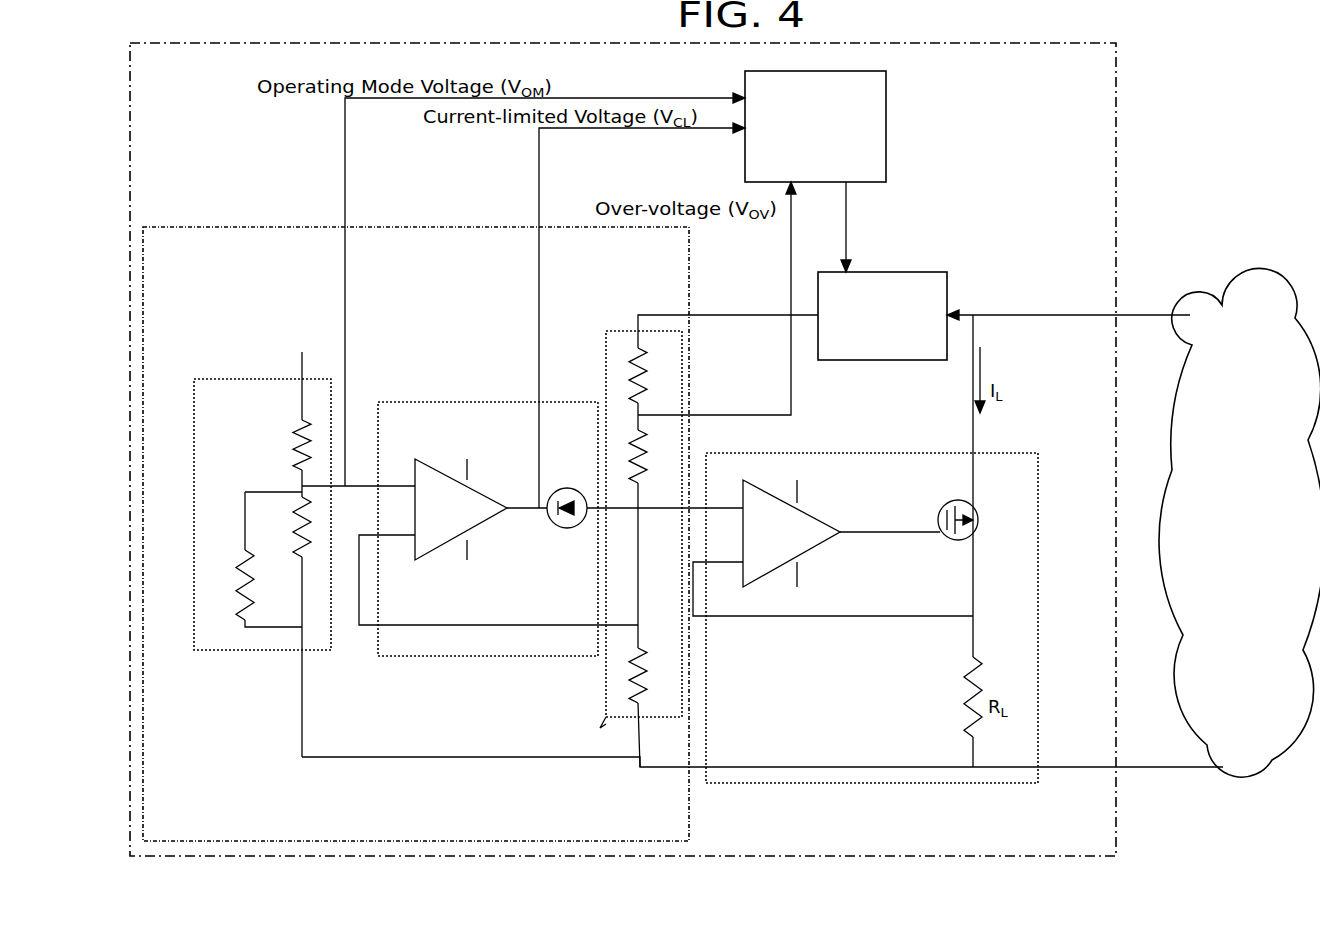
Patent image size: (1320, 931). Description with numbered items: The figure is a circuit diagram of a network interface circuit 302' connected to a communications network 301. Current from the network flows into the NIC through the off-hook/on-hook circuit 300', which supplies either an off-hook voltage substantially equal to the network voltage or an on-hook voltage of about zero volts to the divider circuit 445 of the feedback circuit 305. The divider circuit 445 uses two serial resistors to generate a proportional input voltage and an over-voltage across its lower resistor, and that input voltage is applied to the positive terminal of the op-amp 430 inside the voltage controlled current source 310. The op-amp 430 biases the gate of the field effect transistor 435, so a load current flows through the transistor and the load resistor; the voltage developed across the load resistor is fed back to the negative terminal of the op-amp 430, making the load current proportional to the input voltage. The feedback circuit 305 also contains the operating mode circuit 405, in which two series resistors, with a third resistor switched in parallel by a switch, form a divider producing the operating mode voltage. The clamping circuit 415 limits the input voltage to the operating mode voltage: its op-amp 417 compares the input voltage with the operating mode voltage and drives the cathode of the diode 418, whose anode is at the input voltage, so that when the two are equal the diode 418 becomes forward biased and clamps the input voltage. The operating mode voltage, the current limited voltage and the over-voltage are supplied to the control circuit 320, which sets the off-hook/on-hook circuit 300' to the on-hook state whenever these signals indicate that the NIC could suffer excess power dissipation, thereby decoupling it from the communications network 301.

The network interface circuit 302' is at (665, 449).
The feedback circuit 305 is at (452, 534).
The operating mode circuit 405 is at (256, 538).
The clamping circuit 415 is at (488, 504).
The op-amp 417 is at (461, 489).
The diode 418 is at (545, 538).
The divider circuit 445 is at (590, 527).
The voltage controlled current source 310 is at (872, 583).
The op-amp 430 is at (820, 530).
The field effect transistor 435 is at (980, 509).
The control circuit 320 is at (855, 125).
The off-hook/on-hook circuit 300' is at (882, 296).
The communications network 301 is at (1239, 499).